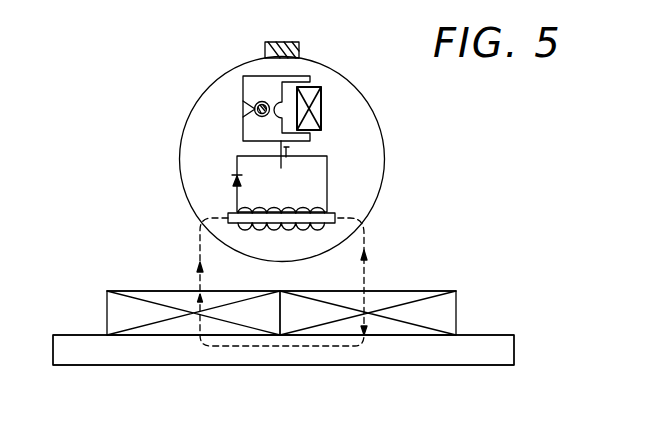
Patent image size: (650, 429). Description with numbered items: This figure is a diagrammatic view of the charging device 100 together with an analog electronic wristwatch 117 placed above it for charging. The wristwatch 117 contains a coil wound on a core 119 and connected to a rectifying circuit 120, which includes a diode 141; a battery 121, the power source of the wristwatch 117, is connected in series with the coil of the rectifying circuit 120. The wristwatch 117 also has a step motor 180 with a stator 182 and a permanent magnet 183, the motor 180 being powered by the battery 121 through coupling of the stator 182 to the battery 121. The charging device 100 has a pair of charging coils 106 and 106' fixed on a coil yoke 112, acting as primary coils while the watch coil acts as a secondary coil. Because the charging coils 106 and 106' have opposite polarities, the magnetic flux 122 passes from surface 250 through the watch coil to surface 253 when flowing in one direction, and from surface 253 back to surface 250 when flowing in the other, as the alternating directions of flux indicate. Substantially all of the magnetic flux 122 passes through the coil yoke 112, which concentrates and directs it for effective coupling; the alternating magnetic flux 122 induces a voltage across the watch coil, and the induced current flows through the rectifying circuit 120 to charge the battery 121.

The charging device 100 is at (119, 377).
The charging coil 106 is at (162, 311).
The charging coil 106' is at (405, 313).
The coil yoke 112 is at (510, 347).
The analog electronic wristwatch 117 is at (378, 120).
The core 119 is at (335, 211).
The rectifying circuit 120 is at (237, 202).
The battery 121 is at (288, 149).
The magnetic flux 122 is at (198, 270).
The diode 141 is at (233, 181).
The step motor 180 is at (243, 92).
The stator 182 is at (322, 103).
The permanent magnet 183 is at (262, 101).
The surface 250 is at (140, 290).
The surface 253 is at (437, 291).